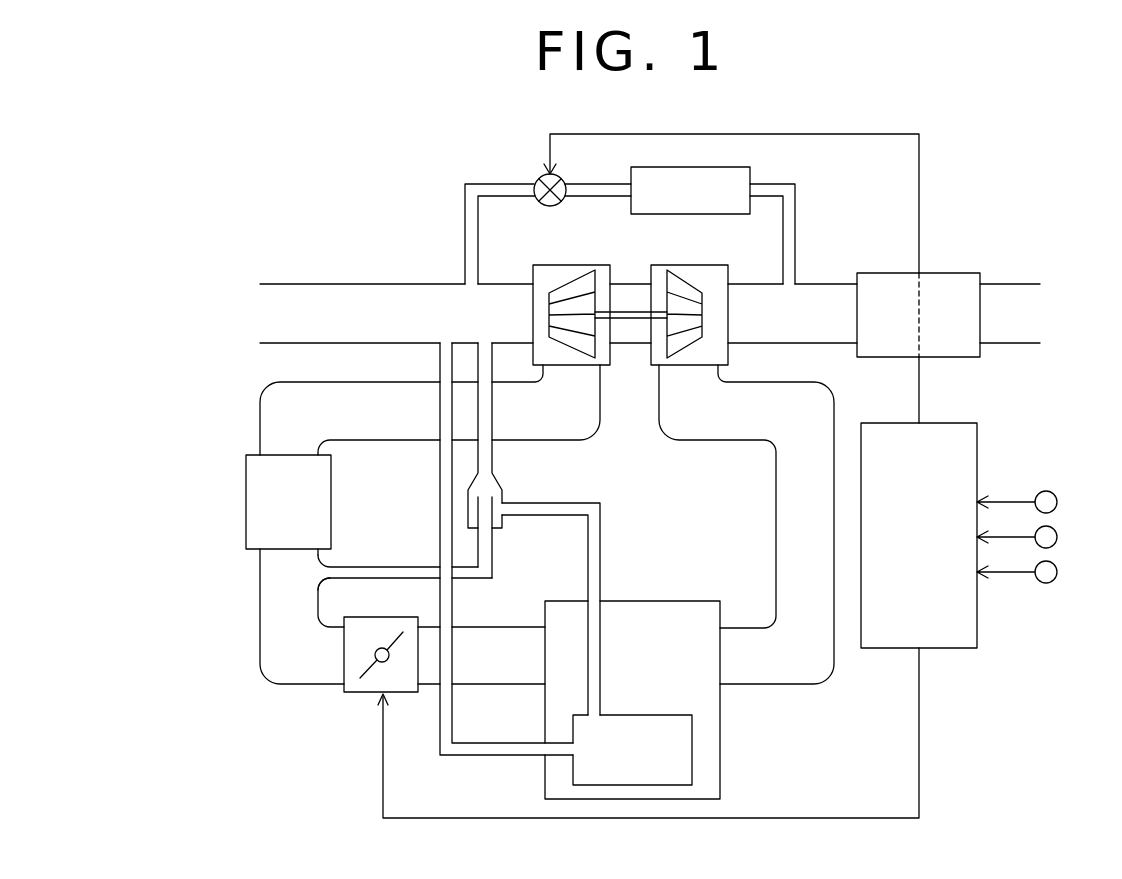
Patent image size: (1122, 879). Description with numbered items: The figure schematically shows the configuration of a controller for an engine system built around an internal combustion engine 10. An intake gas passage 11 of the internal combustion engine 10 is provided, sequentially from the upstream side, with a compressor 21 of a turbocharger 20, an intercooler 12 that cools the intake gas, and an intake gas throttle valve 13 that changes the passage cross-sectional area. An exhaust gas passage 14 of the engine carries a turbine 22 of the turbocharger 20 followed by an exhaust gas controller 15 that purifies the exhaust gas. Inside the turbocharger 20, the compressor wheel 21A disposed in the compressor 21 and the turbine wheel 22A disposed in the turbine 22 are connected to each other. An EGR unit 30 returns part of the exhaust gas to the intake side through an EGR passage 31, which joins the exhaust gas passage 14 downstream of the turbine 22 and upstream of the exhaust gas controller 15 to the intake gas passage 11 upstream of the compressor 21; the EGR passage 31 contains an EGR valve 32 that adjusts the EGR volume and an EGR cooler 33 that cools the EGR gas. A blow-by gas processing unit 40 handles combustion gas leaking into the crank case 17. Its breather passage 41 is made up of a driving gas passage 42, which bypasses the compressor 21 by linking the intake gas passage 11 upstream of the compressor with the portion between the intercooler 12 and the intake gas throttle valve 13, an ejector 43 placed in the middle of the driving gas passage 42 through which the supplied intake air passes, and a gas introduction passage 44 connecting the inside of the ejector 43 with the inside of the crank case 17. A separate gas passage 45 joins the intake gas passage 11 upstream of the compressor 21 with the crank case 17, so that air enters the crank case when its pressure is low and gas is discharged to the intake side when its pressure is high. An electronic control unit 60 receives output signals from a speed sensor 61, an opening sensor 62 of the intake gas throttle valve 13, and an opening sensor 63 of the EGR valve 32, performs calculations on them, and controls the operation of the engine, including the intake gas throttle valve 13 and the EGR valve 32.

The internal combustion engine 10 is at (720, 780).
The intake gas passage 11 is at (425, 284).
The intercooler 12 is at (246, 500).
The intake gas throttle valve 13 is at (365, 692).
The exhaust gas passage 14 is at (840, 343).
The exhaust gas controller 15 is at (950, 273).
The crank case 17 is at (648, 722).
The turbocharger 20 is at (640, 333).
The compressor 21 is at (559, 292).
The compressor wheel 21A is at (546, 291).
The turbine 22 is at (711, 290).
The turbine wheel 22A is at (706, 291).
The EGR unit 30 is at (632, 201).
The EGR passage 31 is at (465, 190).
The EGR valve 32 is at (535, 178).
The EGR cooler 33 is at (678, 167).
The blow-by gas processing unit 40 is at (514, 577).
The breather passage 41 is at (514, 529).
The driving gas passage 42 is at (496, 432).
The ejector 43 is at (504, 521).
The gas introduction passage 44 is at (602, 567).
The gas passage 45 is at (490, 756).
The electronic control unit 60 is at (977, 620).
The speed sensor 61 is at (1057, 502).
The opening sensor 62 is at (1057, 537).
The opening sensor 63 is at (1057, 572).